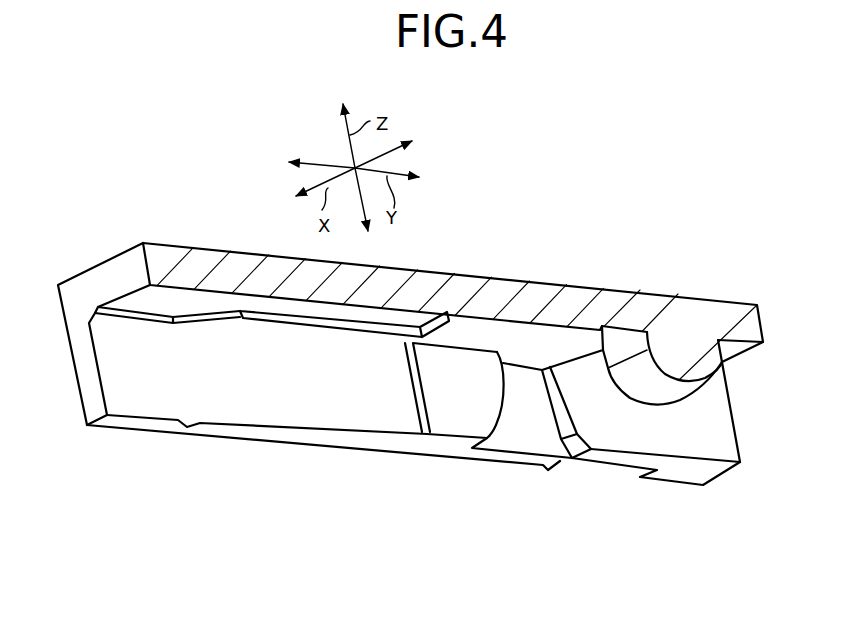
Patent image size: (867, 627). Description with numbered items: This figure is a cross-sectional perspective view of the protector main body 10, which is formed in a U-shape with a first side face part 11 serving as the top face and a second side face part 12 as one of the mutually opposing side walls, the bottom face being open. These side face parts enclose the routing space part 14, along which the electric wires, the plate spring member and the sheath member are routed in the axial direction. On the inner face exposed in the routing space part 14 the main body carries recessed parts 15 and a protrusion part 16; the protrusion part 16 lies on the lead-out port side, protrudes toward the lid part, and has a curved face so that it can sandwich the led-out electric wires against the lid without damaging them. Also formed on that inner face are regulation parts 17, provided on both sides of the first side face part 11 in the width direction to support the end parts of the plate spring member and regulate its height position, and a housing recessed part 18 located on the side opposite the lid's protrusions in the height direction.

The protector main body 10 is at (728, 244).
The first side face part 11 is at (193, 246).
The second side face part 12 is at (78, 390).
The routing space part 14 is at (459, 373).
The recessed part 15 is at (527, 433).
The protrusion part 16 is at (670, 392).
The regulation part 17 is at (239, 323).
The housing recessed part 18 is at (152, 296).